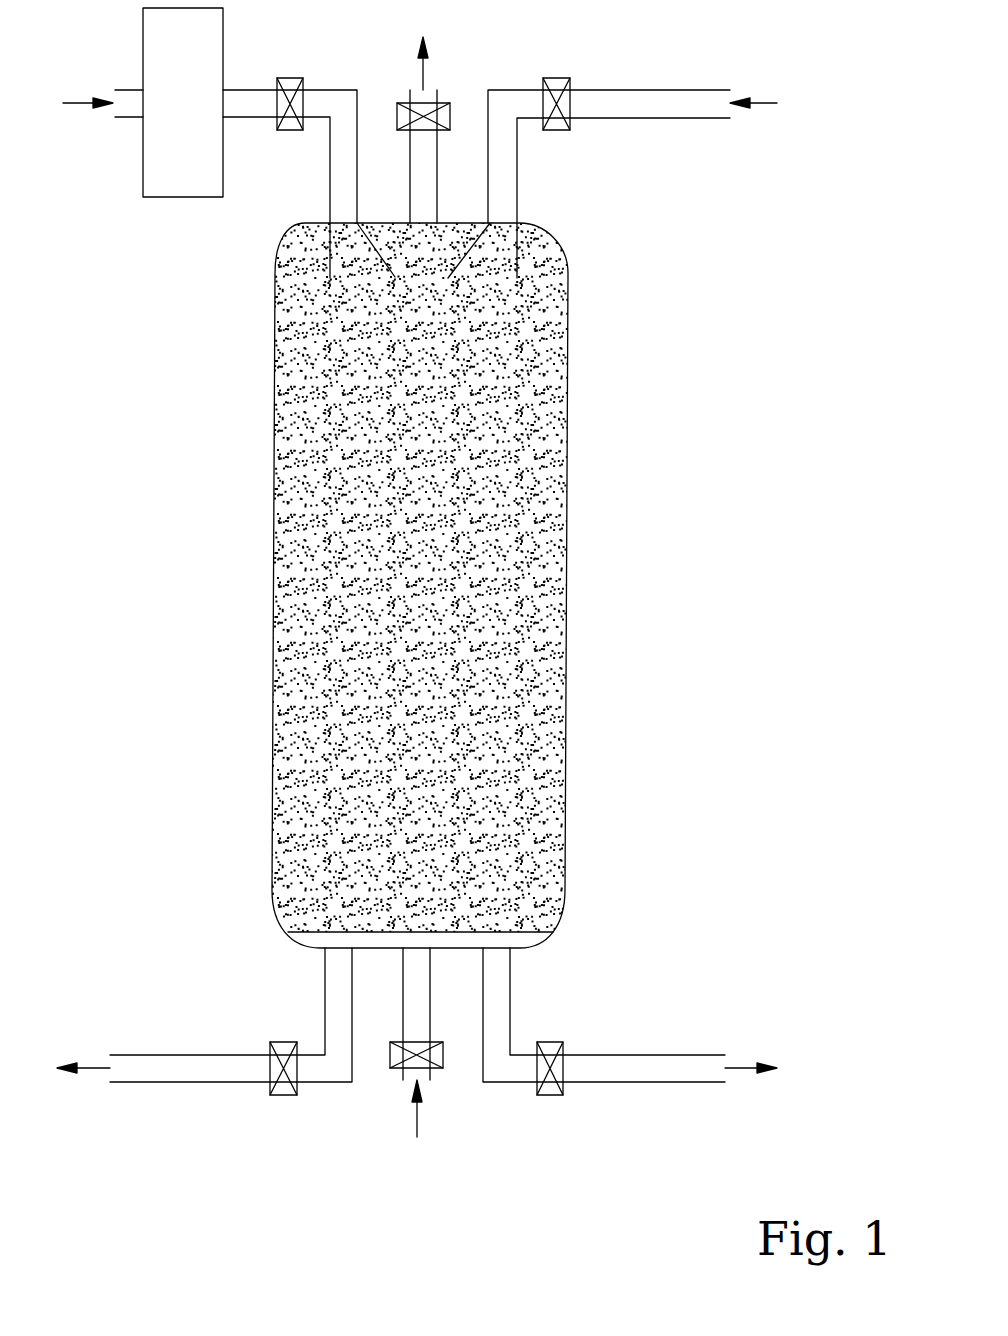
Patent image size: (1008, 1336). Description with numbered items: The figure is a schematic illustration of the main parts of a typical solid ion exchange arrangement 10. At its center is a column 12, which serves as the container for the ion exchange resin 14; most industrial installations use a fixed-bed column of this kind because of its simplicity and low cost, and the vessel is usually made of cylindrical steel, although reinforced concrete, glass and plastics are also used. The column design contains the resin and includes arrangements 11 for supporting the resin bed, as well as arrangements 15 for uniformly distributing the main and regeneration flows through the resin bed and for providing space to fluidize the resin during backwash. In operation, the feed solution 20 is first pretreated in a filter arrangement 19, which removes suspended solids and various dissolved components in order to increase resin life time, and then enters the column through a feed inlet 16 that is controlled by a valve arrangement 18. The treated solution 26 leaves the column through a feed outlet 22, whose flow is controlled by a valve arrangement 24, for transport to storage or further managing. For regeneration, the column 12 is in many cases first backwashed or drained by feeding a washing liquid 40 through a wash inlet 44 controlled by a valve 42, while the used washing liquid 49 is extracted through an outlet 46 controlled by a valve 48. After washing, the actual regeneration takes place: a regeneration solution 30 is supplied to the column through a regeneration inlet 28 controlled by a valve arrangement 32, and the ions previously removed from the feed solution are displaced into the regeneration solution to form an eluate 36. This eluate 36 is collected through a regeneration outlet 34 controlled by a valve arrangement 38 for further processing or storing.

The ion exchange arrangement 10 is at (702, 437).
The arrangements for supporting the resin bed 11 is at (303, 920).
The column 12 is at (566, 545).
The ion exchange resin 14 is at (530, 445).
The arrangements for uniformly distributing flow 15 is at (330, 253).
The feed inlet 16 is at (330, 188).
The valve arrangement 18 is at (290, 78).
The filter arrangement 19 is at (183, 178).
The feed solution 20 is at (86, 100).
The feed outlet 22 is at (325, 980).
The valve arrangement 24 is at (283, 1097).
The treated solution 26 is at (82, 1072).
The regeneration inlet 28 is at (517, 188).
The regeneration solution 30 is at (760, 100).
The valve arrangement 32 is at (553, 78).
The regeneration outlet 34 is at (510, 983).
The eluate 36 is at (757, 1072).
The valve arrangement 38 is at (550, 1097).
The washing liquid 40 is at (412, 1125).
The valve 42 is at (440, 1072).
The wash inlet 44 is at (423, 958).
The outlet 46 is at (427, 213).
The valve 48 is at (450, 100).
The washing liquid 49 is at (417, 50).